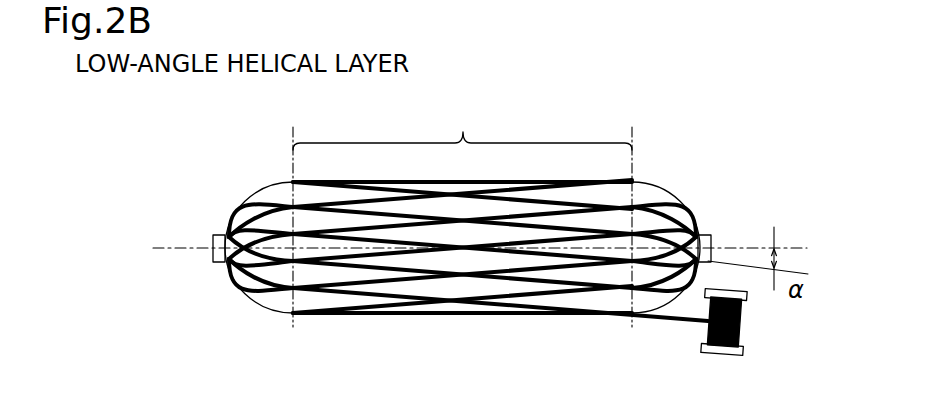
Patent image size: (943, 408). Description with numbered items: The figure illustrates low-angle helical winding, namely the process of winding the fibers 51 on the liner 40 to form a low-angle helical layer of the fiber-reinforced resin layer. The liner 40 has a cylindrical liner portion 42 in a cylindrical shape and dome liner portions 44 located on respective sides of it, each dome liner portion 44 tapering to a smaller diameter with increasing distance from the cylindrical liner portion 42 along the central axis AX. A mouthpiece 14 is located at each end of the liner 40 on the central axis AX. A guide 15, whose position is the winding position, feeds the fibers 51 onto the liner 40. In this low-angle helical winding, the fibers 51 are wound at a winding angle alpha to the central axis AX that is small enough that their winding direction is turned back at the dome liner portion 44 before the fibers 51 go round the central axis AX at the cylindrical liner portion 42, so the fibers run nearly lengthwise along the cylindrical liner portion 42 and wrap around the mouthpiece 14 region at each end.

The mouthpiece 14 is at (202, 238).
The guide 15 is at (752, 340).
The liner 40 is at (700, 138).
The cylindrical liner portion 42 is at (462, 217).
The dome liner portion 44 is at (273, 197).
The fibers 51 is at (667, 321).